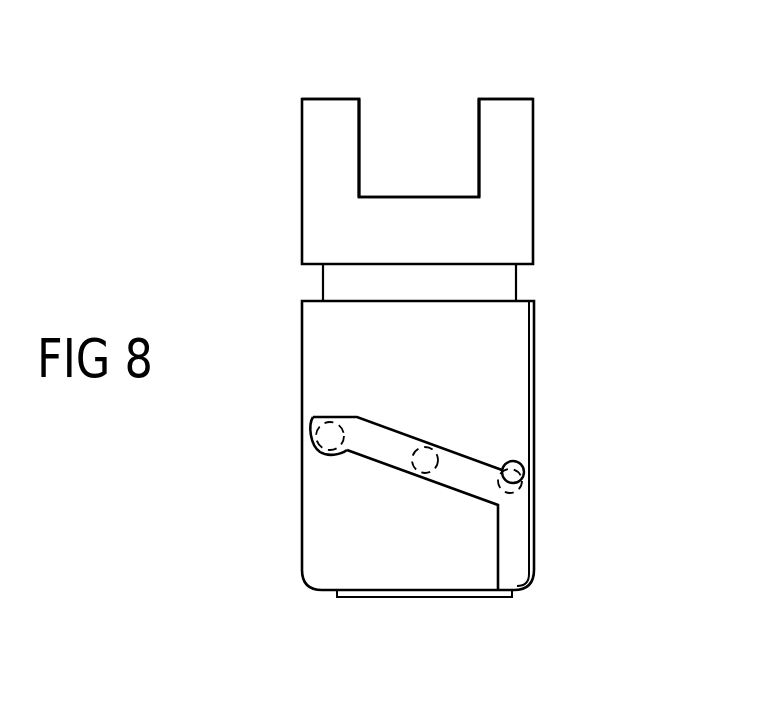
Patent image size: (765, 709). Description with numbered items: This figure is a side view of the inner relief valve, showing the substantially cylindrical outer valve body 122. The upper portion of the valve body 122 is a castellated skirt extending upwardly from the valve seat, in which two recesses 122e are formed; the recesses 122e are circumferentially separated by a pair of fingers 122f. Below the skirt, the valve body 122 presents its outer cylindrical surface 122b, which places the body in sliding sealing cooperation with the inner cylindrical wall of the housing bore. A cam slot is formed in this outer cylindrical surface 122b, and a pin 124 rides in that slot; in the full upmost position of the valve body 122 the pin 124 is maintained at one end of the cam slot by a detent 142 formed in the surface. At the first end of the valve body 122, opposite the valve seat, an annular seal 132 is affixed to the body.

The outer valve body 122 is at (562, 372).
The recesses 122e is at (478, 135).
The fingers 122f is at (323, 167).
The outer cylindrical surface 122b is at (507, 330).
The pin 124 is at (512, 484).
The detent 142 is at (525, 467).
The annular seal 132 is at (503, 597).